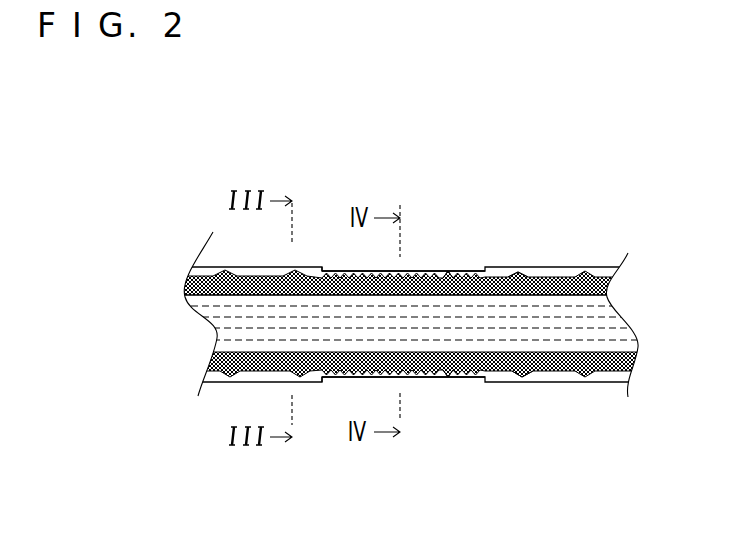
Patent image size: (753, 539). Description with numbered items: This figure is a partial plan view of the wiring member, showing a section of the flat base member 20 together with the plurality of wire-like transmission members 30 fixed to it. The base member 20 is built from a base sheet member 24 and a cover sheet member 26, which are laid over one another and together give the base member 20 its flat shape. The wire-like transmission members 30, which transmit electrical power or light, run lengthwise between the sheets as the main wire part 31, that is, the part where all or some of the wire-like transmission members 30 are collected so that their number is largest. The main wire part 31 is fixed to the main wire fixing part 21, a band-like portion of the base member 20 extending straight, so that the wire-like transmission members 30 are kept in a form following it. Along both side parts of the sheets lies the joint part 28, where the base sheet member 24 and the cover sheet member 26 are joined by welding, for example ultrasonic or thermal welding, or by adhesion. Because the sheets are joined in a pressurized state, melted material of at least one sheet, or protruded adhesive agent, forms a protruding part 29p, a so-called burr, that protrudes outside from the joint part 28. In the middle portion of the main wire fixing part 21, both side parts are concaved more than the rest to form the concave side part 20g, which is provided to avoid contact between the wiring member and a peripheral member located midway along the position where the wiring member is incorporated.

The base member 20 is at (617, 391).
The concave side part 20g is at (408, 270).
The main wire fixing part 21 is at (235, 263).
The base sheet member 24 is at (580, 267).
The cover sheet member 26 is at (608, 297).
The joint part 28 is at (335, 270).
The protruding part 29p is at (459, 272).
The wire-like transmission member 30 is at (609, 330).
The main wire part 31 is at (585, 355).